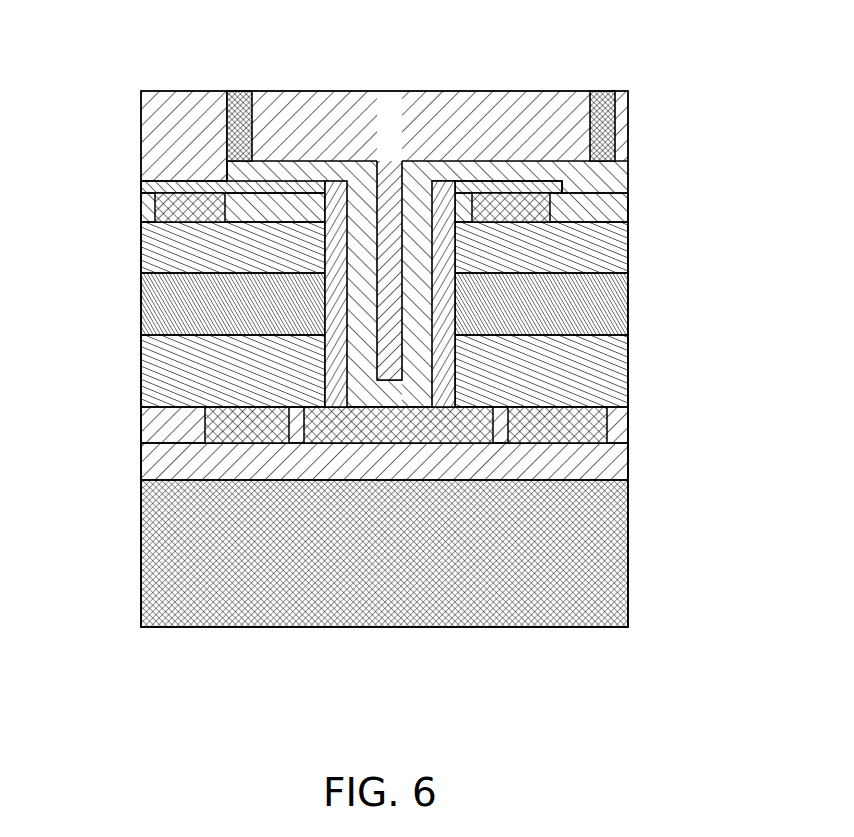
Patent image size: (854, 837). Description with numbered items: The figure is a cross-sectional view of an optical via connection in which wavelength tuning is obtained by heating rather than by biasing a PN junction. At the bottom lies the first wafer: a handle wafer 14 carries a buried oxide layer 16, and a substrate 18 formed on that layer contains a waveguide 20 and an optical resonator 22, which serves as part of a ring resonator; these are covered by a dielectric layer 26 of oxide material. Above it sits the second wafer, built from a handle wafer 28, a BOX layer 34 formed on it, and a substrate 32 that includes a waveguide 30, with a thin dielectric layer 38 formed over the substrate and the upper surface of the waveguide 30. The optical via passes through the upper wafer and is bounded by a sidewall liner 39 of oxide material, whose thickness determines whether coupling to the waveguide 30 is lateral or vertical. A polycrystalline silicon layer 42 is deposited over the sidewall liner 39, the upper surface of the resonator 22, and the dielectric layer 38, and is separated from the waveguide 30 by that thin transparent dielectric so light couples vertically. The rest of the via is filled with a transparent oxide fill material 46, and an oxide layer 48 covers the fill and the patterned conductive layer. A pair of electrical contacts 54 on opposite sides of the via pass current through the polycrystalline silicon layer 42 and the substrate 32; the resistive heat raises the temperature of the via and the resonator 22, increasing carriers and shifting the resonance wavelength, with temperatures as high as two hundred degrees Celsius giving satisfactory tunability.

The handle wafer 14 is at (630, 537).
The buried oxide (BOX) layer 16 is at (623, 458).
The substrate 18 is at (627, 418).
The waveguide 20 is at (217, 427).
The optical resonator 22 is at (458, 428).
The dielectric layer 26 is at (617, 370).
The handle wafer 28 is at (617, 312).
The waveguide 30 is at (632, 212).
The substrate 32 is at (140, 190).
The BOX layer 34 is at (150, 252).
The dielectric layer 38 is at (550, 202).
The sidewall liner 39 is at (333, 178).
The polycrystalline silicon layer 42 is at (482, 160).
The oxide fill material 46 is at (383, 163).
The oxide layer 48 is at (398, 91).
The electrical contacts 54 is at (238, 91).